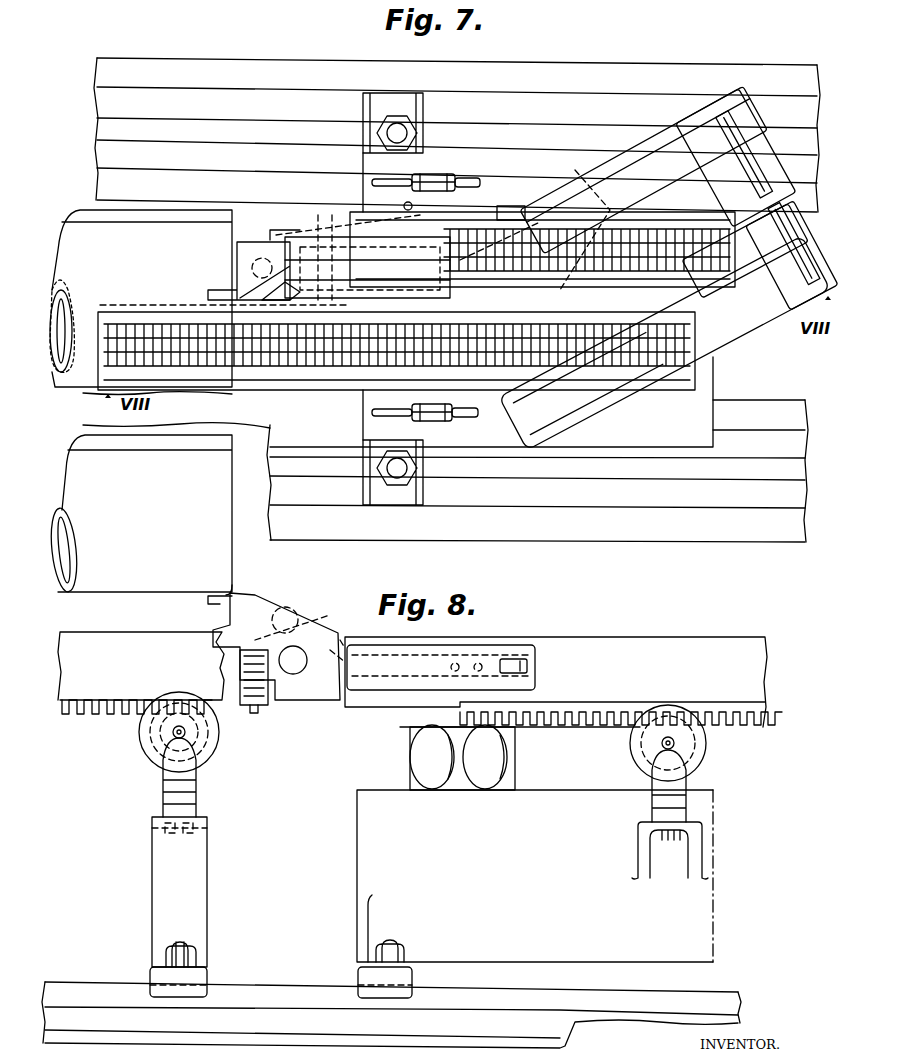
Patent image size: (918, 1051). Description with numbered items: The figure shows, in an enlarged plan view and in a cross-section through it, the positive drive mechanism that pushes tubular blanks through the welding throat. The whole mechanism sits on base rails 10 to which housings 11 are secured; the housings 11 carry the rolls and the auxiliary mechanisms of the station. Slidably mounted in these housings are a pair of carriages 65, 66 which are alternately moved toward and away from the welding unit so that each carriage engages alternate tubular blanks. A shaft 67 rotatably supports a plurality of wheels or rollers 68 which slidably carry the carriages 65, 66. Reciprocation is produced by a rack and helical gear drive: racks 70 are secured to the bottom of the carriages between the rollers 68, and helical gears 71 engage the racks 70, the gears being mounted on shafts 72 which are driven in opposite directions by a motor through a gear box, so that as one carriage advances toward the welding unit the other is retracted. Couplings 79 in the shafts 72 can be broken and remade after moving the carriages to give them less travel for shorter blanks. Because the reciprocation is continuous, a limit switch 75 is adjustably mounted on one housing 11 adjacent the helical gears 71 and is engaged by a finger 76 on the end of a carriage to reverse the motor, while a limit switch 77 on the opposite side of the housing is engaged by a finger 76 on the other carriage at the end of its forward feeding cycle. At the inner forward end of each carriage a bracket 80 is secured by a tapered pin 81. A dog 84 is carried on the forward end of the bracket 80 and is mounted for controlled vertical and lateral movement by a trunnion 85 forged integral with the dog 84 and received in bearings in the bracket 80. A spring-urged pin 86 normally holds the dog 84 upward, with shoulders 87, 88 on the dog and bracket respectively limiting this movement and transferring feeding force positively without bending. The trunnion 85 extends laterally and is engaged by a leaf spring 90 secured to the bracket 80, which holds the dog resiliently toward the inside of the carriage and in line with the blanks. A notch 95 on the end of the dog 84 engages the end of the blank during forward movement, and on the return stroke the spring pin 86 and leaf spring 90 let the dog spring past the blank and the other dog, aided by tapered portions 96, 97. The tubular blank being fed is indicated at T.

In FIG. 7, the rails 10 is at (790, 72).
In FIG. 8, the rails 10 is at (712, 996).
In FIG. 7, the housings 11 is at (713, 380).
In FIG. 8, the housings 11 is at (705, 905).
In FIG. 7, the carriage 65 is at (338, 382).
In FIG. 7, the carriage 66 is at (618, 232).
In FIG. 8, the carriage 66 is at (125, 620).
In FIG. 8, the shaft 67 is at (188, 736).
In FIG. 8, the rollers 68 is at (158, 748).
In FIG. 7, the racks 70 is at (262, 372).
In FIG. 8, the racks 70 is at (125, 716).
In FIG. 7, the helical gears 71 is at (586, 200).
In FIG. 8, the helical gears 71 is at (583, 722).
In FIG. 7, the shafts 72 is at (674, 174).
In FIG. 7, the limit switch 75 is at (435, 175).
In FIG. 7, the finger 76 is at (408, 204).
In FIG. 7, the limit switch 77 is at (437, 424).
In FIG. 7, the couplings 79 is at (725, 124).
In FIG. 7, the bracket 80 is at (384, 268).
In FIG. 8, the bracket 80 is at (328, 692).
In FIG. 7, the tapered pin 81 is at (508, 206).
In FIG. 8, the tapered pin 81 is at (528, 666).
In FIG. 7, the dog 84 is at (240, 295).
In FIG. 8, the dog 84 is at (245, 598).
In FIG. 7, the trunnion 85 is at (269, 240).
In FIG. 8, the trunnion 85 is at (293, 675).
In FIG. 7, the spring-urged pin 86 is at (262, 258).
In FIG. 8, the spring-urged pin 86 is at (242, 652).
In FIG. 8, the shoulder 87 is at (298, 640).
In FIG. 8, the shoulder 88 is at (283, 610).
In FIG. 7, the leaf spring 90 is at (328, 232).
In FIG. 8, the leaf spring 90 is at (339, 640).
In FIG. 8, the notch 95 is at (212, 598).
In FIG. 8, the tapered portion 96 is at (244, 586).
In FIG. 7, the tapered portion 97 is at (293, 296).
In FIG. 7, the tire T is at (73, 244).
In FIG. 8, the tire T is at (72, 457).